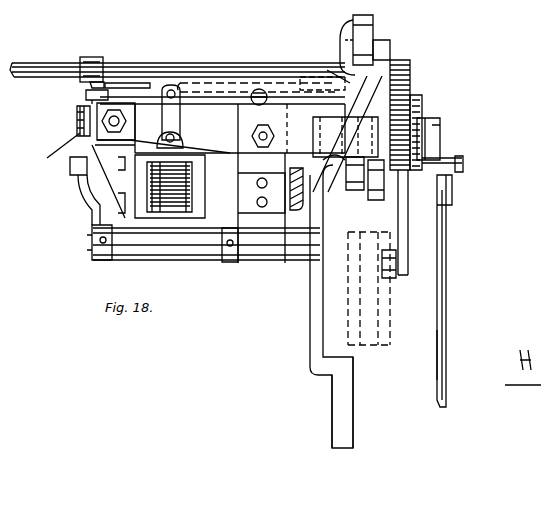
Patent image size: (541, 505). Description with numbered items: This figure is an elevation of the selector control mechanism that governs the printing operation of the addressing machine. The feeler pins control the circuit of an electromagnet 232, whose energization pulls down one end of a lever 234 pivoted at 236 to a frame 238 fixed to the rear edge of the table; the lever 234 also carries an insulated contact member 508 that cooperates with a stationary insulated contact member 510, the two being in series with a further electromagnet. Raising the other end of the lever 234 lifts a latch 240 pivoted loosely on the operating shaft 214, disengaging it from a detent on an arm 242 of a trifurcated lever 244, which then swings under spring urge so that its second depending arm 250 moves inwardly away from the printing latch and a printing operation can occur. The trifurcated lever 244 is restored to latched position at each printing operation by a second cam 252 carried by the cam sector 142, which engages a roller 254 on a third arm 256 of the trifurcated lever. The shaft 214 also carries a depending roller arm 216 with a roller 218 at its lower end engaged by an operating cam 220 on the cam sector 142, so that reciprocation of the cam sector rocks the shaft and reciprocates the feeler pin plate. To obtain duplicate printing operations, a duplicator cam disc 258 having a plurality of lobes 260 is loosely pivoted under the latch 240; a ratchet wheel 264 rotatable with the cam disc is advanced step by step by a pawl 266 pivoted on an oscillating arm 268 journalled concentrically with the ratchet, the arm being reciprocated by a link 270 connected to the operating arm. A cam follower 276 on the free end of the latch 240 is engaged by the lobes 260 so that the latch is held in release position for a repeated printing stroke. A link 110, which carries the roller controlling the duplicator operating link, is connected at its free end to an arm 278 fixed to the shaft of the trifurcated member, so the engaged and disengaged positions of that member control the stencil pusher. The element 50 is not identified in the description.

The operating shaft 214 is at (44, 64).
The insulated contact member 508 is at (121, 81).
The stationary insulated contact member 510 is at (86, 96).
The clamp 50 is at (77, 116).
The lever 234 is at (225, 90).
The pivot 236 is at (261, 84).
The frame 238 is at (151, 90).
The trifurcated lever 244 is at (316, 238).
The electromagnet 232 is at (155, 195).
The link 110 is at (76, 178).
The arm 278 is at (88, 193).
The latch 240 is at (366, 42).
The arm 242 is at (390, 54).
The duplicator cam disc 258 is at (352, 38).
The cam follower 276 is at (396, 73).
The ratchet wheel 264 is at (418, 100).
The lobes 260 is at (416, 120).
The oscillating arm 268 is at (425, 158).
The pawl 266 is at (460, 164).
The third arm 256 is at (352, 190).
The roller 254 is at (374, 180).
The depending roller arm 216 is at (406, 232).
The roller 218 is at (390, 278).
The link 270 is at (444, 258).
The operating cam 220 is at (393, 338).
The cam sector 142 is at (372, 350).
The second cam 252 is at (350, 300).
The second depending arm 250 is at (318, 353).